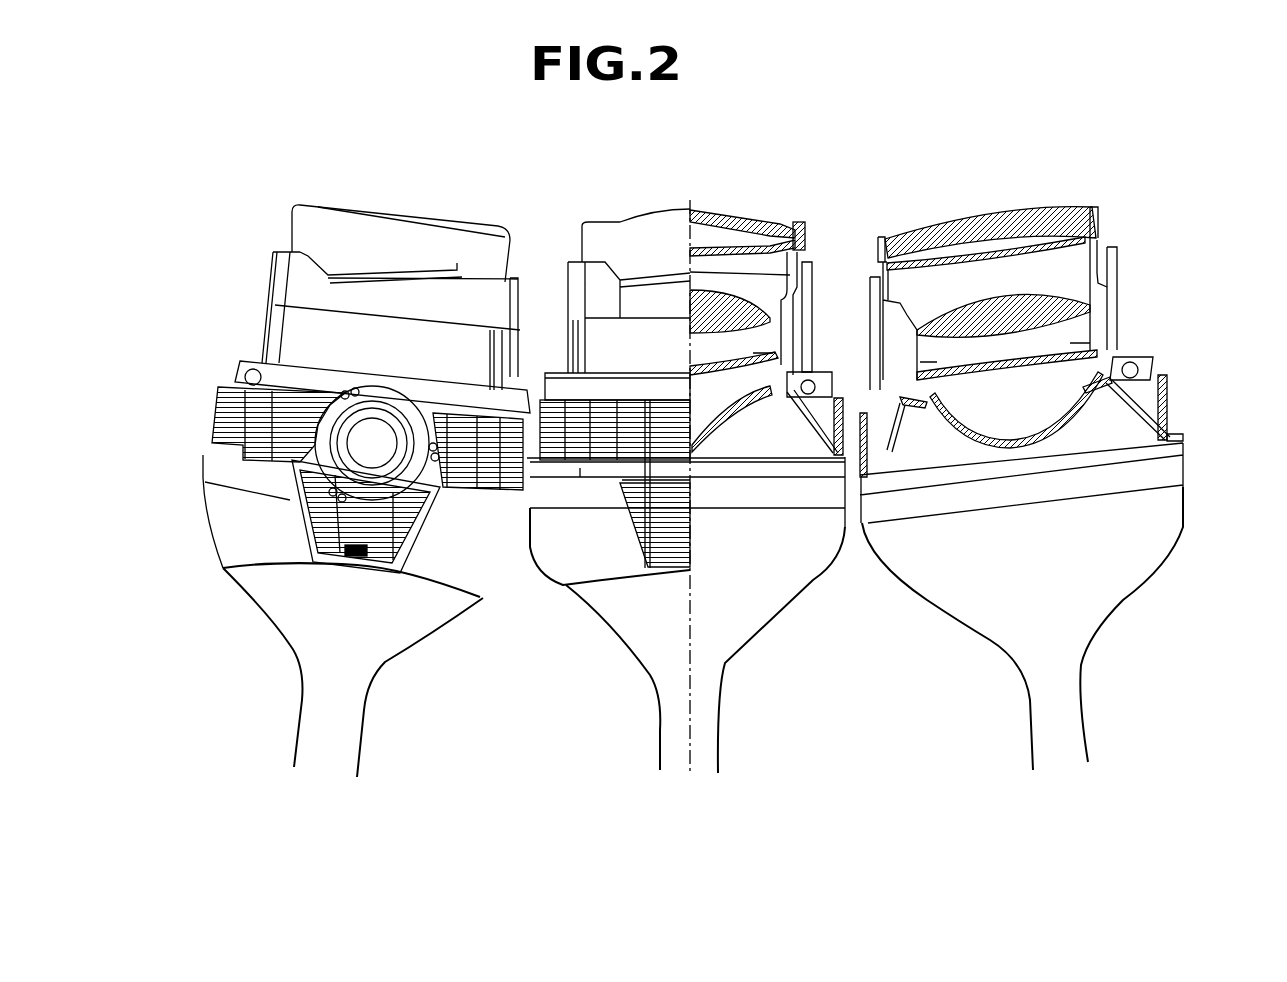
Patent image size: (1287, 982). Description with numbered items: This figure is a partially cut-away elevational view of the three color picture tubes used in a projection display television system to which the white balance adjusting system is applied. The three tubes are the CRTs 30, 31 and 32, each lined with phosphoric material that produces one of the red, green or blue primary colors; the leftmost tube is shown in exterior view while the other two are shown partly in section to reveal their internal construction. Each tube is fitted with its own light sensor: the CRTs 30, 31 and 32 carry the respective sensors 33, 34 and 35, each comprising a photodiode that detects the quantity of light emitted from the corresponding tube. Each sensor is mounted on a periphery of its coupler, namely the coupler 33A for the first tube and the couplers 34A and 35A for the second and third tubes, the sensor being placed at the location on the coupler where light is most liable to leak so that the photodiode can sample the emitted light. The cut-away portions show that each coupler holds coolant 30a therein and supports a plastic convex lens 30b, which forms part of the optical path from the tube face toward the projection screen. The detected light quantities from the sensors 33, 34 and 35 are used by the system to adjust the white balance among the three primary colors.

The CRT 30 is at (262, 587).
The coolant 30a is at (780, 437).
The plastic convex lens 30b is at (1020, 375).
The CRT 31 is at (613, 600).
The CRT 32 is at (927, 577).
The sensor 33 is at (237, 370).
The coupler 33A is at (217, 397).
The sensor 34 is at (805, 372).
The coupler 34A is at (845, 398).
The sensor 35 is at (1147, 357).
The coupler 35A is at (1170, 400).